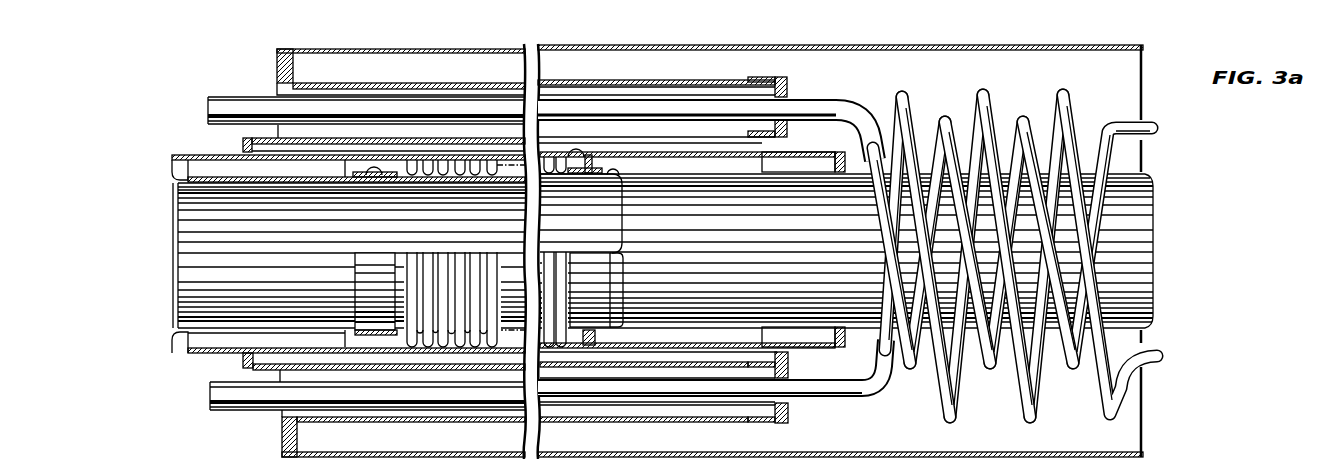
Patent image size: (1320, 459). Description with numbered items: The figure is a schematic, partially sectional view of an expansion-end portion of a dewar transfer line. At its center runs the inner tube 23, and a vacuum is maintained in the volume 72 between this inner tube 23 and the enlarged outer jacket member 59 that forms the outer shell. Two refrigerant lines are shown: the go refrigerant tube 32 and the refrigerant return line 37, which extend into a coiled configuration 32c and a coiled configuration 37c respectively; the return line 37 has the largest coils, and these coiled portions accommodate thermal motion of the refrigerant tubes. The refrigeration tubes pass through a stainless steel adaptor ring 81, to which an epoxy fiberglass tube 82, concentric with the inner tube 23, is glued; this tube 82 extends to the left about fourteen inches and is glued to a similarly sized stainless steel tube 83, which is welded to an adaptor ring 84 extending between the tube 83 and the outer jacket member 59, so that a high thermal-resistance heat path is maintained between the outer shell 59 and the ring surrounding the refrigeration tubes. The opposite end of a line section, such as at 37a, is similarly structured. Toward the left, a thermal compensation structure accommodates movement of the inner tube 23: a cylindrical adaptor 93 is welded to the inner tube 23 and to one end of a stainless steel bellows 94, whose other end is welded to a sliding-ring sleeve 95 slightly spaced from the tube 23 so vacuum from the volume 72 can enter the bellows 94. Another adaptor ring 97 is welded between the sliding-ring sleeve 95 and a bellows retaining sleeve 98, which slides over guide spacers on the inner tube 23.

The inner tube 23 is at (1150, 177).
The go refrigerant tube 32 is at (838, 96).
The coiled configuration of refrigerant tube 32 32c is at (1026, 118).
The refrigerant return line 37 is at (712, 366).
The opposite end of transfer line section 37a is at (238, 395).
The coiled configuration of refrigerant return line 37 37c is at (975, 256).
The enlarged outer jacket member 59 is at (1142, 45).
The volume 72 is at (1080, 71).
The adaptor ring 81 is at (788, 85).
The epoxy fiberglass tube 82 is at (669, 82).
The stainless steel tube 83 is at (451, 83).
The adaptor ring 84 is at (277, 66).
The cylindrical adaptor 93 is at (372, 178).
The stainless steel bellows 94 is at (443, 260).
The sliding-ring sleeve 95 is at (622, 180).
The adaptor ring 97 is at (593, 247).
The bellows retaining sleeve 98 is at (556, 252).